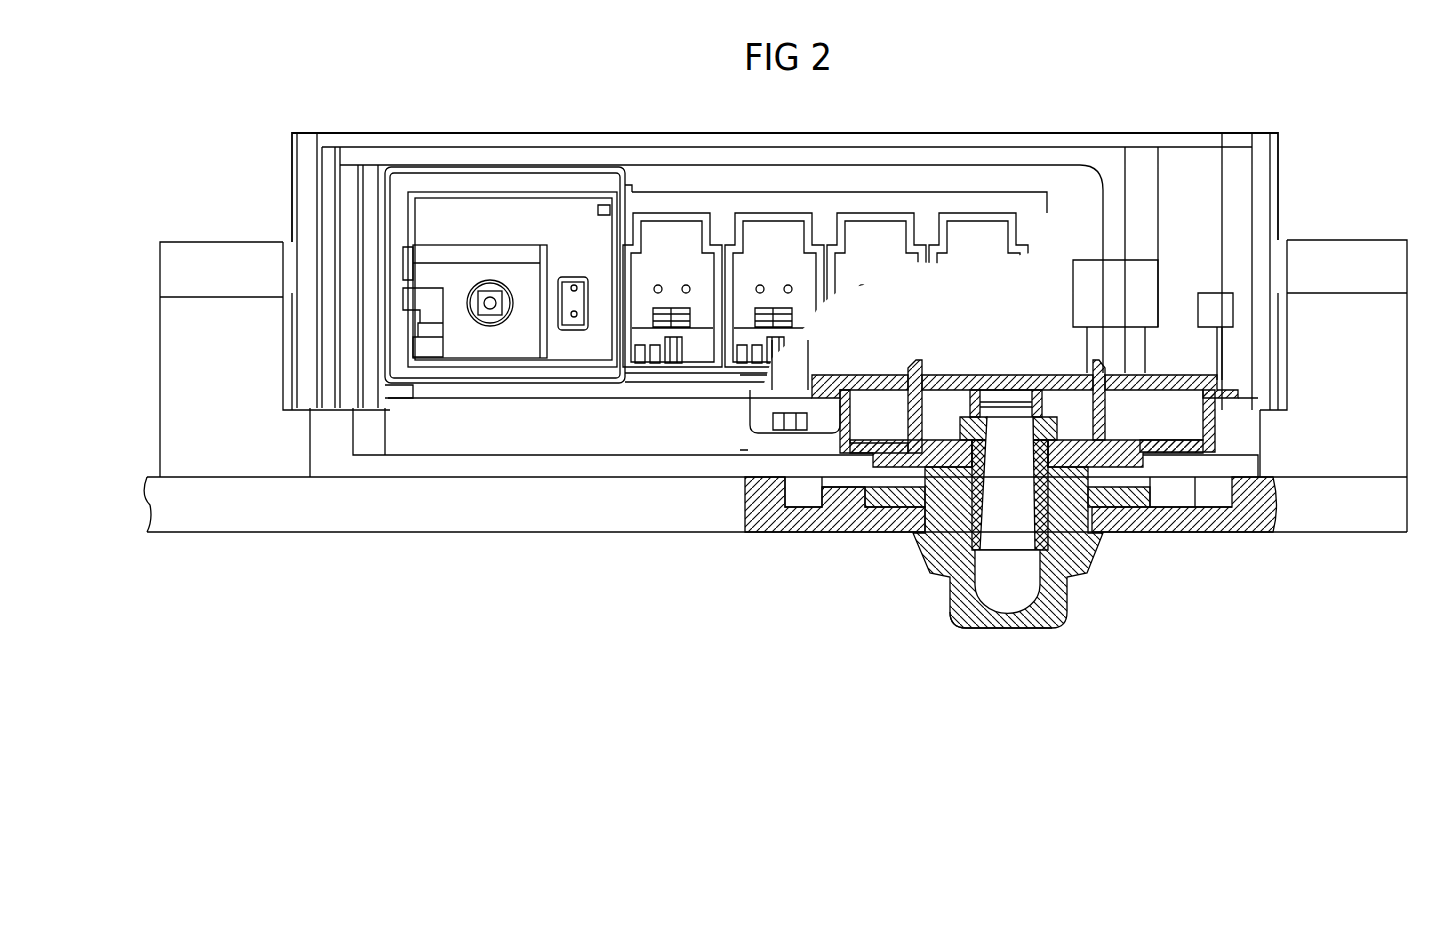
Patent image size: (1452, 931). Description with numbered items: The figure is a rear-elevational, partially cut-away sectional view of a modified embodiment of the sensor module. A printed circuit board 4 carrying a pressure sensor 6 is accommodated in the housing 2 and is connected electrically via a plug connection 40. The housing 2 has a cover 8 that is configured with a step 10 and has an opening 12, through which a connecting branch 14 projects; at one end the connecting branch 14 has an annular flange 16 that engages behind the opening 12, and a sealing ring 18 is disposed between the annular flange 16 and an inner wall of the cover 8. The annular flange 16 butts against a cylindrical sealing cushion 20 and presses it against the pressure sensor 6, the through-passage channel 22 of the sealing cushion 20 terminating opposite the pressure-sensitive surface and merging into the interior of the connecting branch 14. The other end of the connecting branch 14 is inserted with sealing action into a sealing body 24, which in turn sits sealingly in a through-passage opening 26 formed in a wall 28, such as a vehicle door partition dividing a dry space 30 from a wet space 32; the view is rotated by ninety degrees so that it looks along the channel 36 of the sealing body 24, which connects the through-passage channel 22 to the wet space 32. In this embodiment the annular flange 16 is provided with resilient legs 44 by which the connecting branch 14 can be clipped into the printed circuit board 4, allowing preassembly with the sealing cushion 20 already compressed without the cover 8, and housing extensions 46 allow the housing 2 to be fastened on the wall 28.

The housing 2 is at (1050, 158).
The printed circuit board 4 is at (1030, 373).
The pressure sensor 6 is at (983, 372).
The cover 8 is at (1240, 442).
The step 10 is at (1095, 508).
The opening 12 is at (1081, 580).
The connecting branch 14 is at (958, 545).
The annular flange 16 is at (892, 520).
The sealing ring 18 is at (1113, 525).
The sealing cushion 20 is at (945, 396).
The through-passage channel 22 is at (1007, 437).
The sealing body 24 is at (973, 618).
The through-passage opening 26 is at (837, 500).
The wall 28 is at (522, 535).
The dry space 30 is at (1338, 116).
The wet space 32 is at (1288, 618).
The channel 36 is at (1018, 600).
The plug connection 40 is at (516, 182).
The resilient legs 44 is at (892, 375).
The housing extensions 46 is at (210, 252).